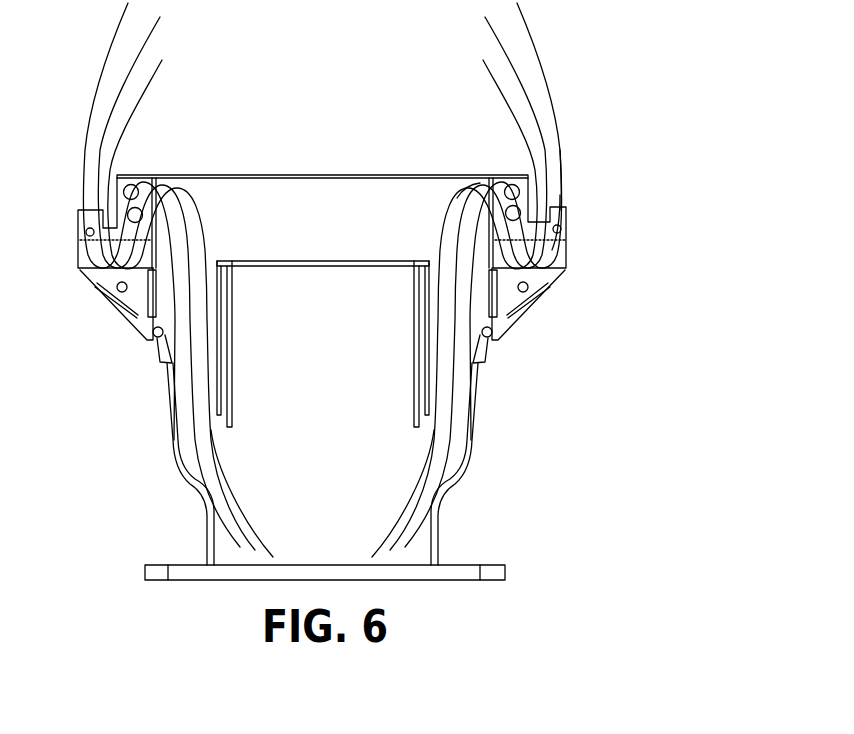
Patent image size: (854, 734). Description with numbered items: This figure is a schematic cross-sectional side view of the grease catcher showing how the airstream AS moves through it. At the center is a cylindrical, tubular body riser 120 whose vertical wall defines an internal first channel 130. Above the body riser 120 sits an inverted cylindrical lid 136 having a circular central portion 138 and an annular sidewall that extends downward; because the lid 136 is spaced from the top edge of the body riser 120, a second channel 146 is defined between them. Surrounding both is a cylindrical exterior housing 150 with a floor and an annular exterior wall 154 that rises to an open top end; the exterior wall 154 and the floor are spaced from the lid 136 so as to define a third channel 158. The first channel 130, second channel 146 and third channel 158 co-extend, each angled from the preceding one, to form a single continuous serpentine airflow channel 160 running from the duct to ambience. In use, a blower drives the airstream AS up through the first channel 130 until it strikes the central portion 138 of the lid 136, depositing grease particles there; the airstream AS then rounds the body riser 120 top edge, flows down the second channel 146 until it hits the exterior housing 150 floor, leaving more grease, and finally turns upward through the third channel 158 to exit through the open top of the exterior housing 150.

The central portion 138 is at (207, 175).
The lid 136 is at (240, 175).
The body riser 120 is at (153, 242).
The first channel 130 is at (462, 243).
The airstream AS is at (457, 198).
The second channel 146 is at (522, 190).
The airflow channel 160 is at (572, 150).
The third channel 158 is at (573, 195).
The exterior housing 150 is at (566, 227).
The exterior wall 154 is at (564, 242).